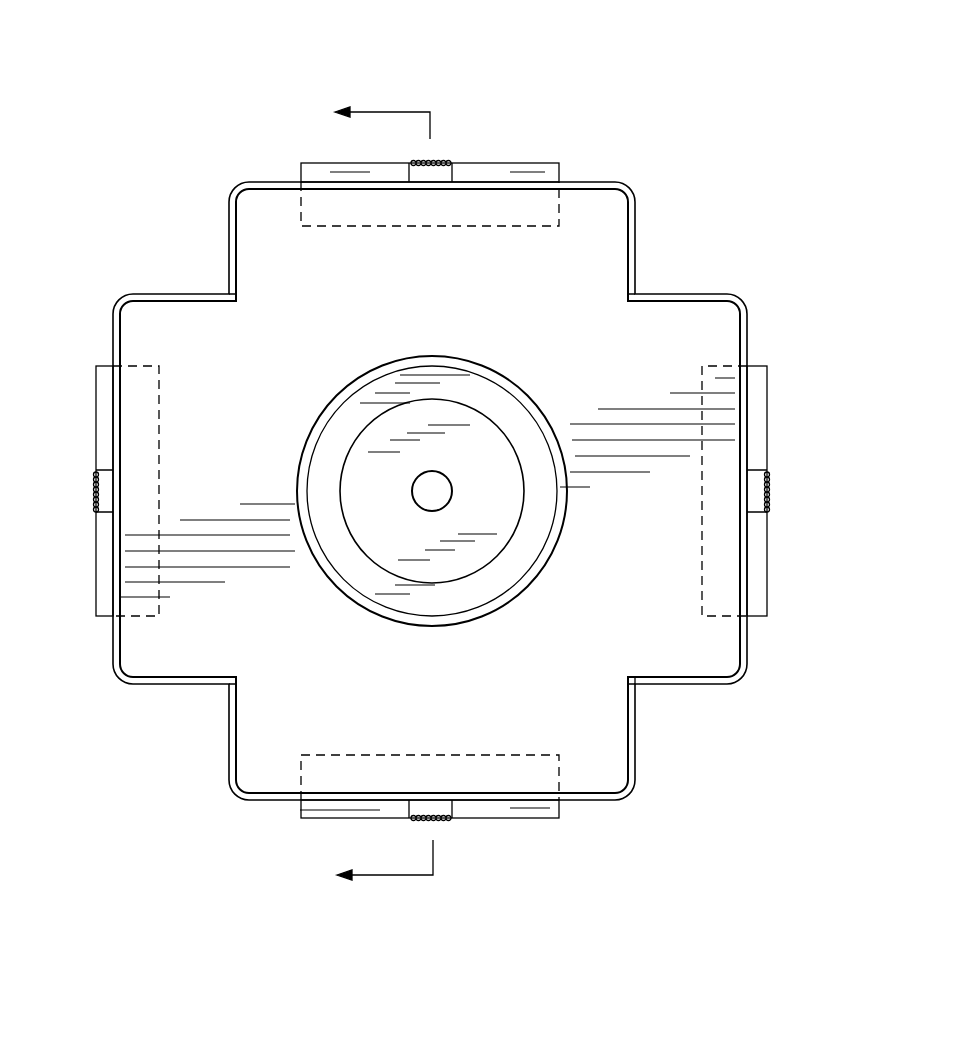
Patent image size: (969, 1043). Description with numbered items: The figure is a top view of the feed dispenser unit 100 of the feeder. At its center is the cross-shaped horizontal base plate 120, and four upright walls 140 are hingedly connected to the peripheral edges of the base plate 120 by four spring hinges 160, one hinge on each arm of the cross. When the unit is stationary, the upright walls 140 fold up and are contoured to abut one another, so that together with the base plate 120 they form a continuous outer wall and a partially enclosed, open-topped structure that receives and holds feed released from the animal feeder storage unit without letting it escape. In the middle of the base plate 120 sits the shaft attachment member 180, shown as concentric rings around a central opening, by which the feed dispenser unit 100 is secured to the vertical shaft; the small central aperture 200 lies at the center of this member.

The feed dispenser unit 100 is at (92, 66).
The horizontal base plate 120 is at (343, 656).
The upright wall 140 is at (580, 182).
The spring hinge 160 is at (492, 163).
The shaft attachment member 180 is at (512, 418).
The central aperture 200 is at (452, 492).